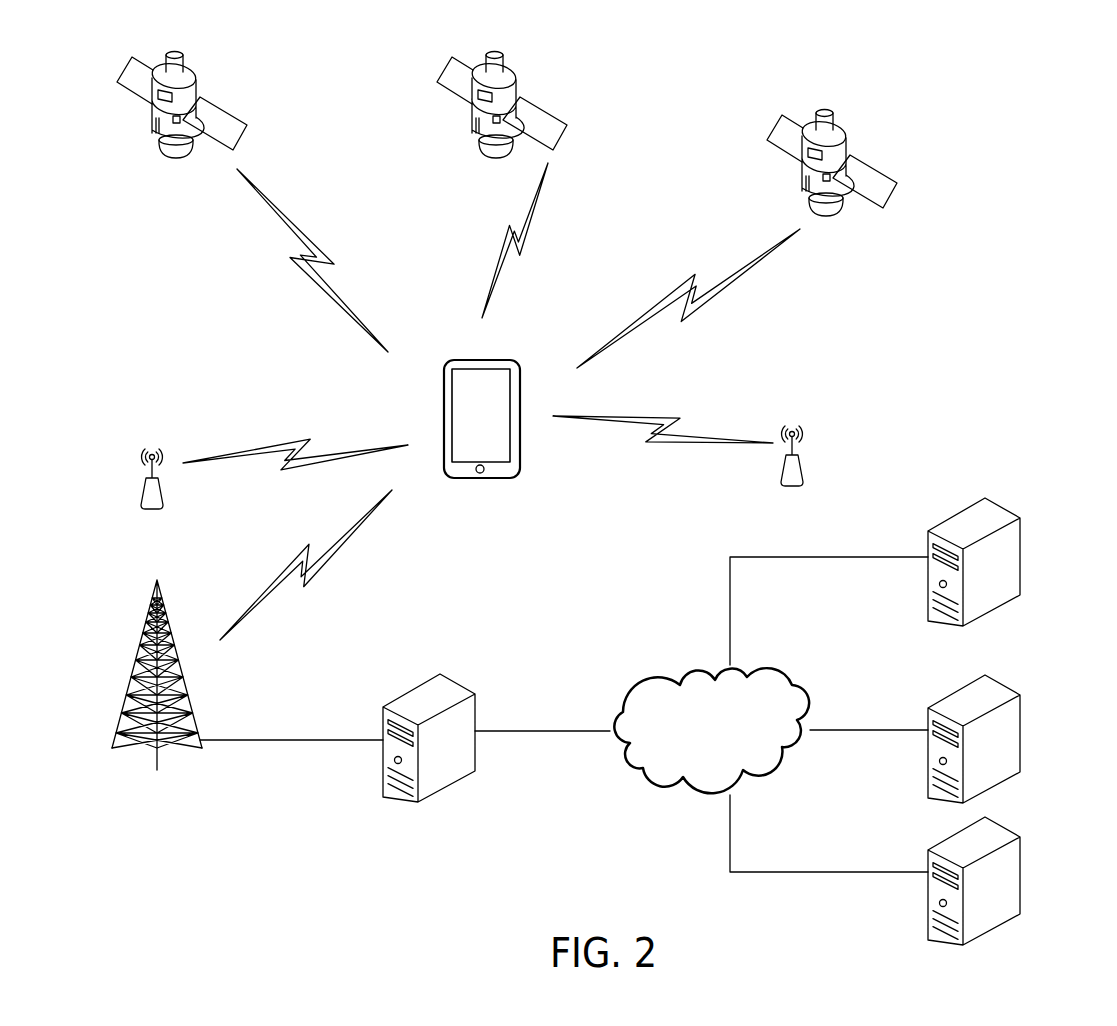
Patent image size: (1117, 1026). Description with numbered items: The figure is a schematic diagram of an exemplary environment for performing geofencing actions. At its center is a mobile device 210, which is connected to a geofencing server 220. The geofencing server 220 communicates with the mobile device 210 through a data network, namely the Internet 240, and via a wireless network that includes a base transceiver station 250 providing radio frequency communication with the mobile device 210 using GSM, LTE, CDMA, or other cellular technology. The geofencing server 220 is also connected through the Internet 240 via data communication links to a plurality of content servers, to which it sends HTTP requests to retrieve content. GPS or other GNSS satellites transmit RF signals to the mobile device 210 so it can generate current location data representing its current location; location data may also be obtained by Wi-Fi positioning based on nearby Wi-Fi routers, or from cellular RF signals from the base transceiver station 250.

The mobile device 210 is at (487, 480).
The geofencing server 220 is at (448, 785).
The Internet 240 is at (688, 757).
The base transceiver station 250 is at (126, 695).